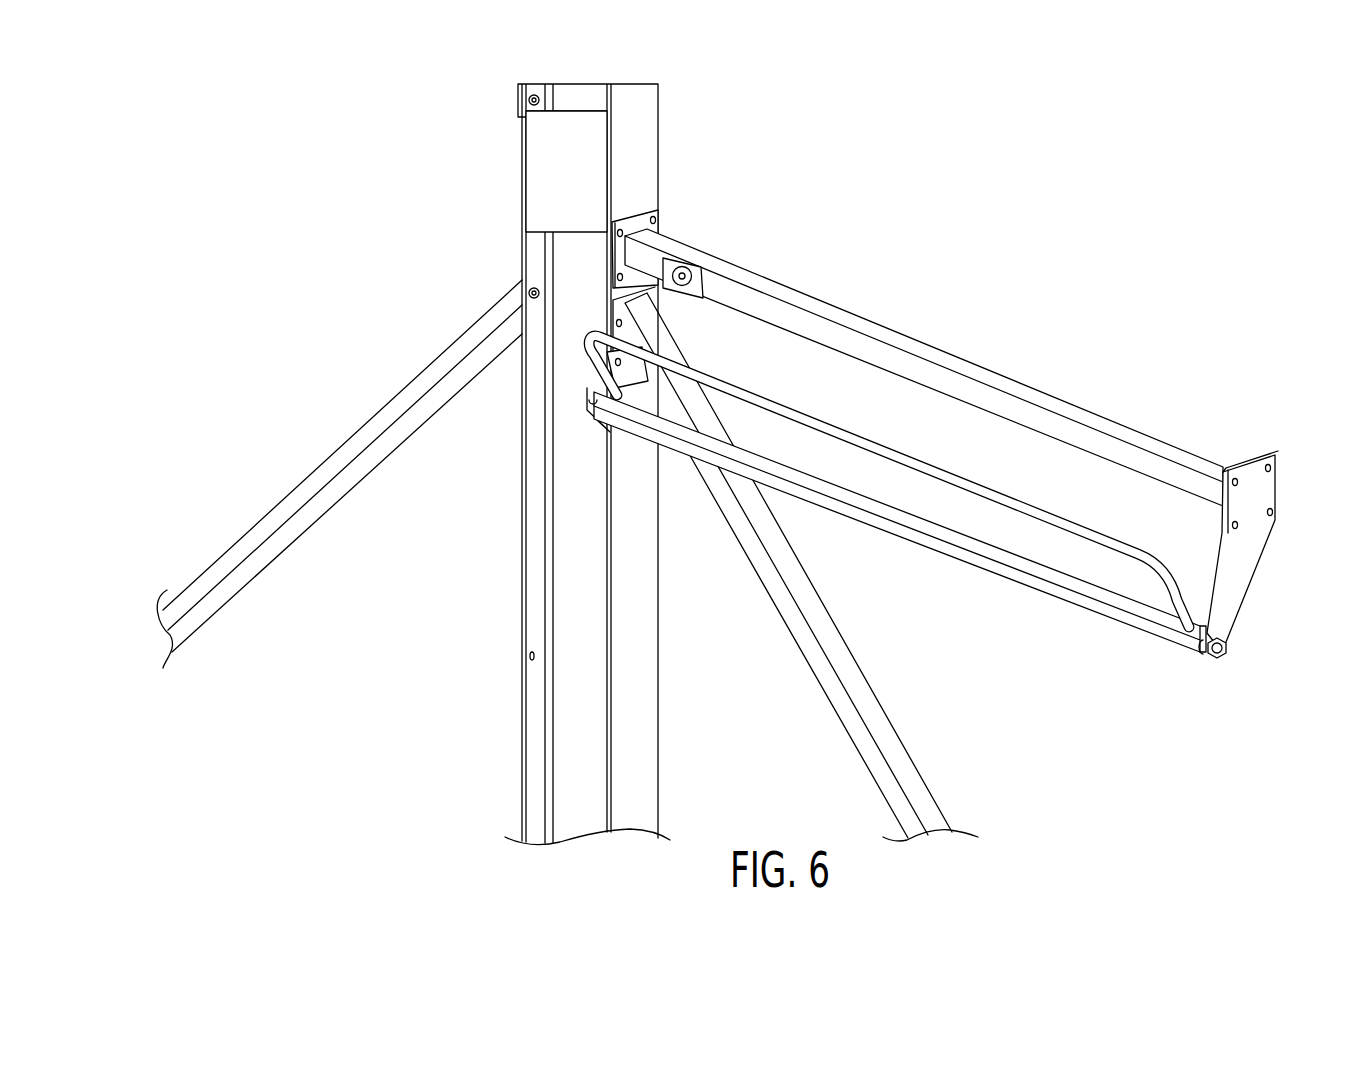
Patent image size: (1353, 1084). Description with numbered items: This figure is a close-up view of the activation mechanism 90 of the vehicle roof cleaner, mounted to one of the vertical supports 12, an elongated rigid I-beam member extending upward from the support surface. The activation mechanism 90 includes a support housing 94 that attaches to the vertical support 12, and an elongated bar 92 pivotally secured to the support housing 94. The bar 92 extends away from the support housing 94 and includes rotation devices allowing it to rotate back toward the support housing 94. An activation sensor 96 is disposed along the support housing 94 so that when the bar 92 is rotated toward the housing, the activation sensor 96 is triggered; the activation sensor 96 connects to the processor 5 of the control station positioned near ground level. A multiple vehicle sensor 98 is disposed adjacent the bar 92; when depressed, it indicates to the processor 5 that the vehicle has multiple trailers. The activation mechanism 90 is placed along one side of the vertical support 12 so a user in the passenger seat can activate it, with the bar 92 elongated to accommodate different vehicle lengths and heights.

The processor 5 is at (527, 179).
The vertical support 12 is at (659, 167).
The activation mechanism 90 is at (1031, 331).
The bar 92 is at (1160, 570).
The support housing 94 is at (1199, 448).
The activation sensor 96 is at (633, 392).
The multiple vehicle sensor 98 is at (686, 266).